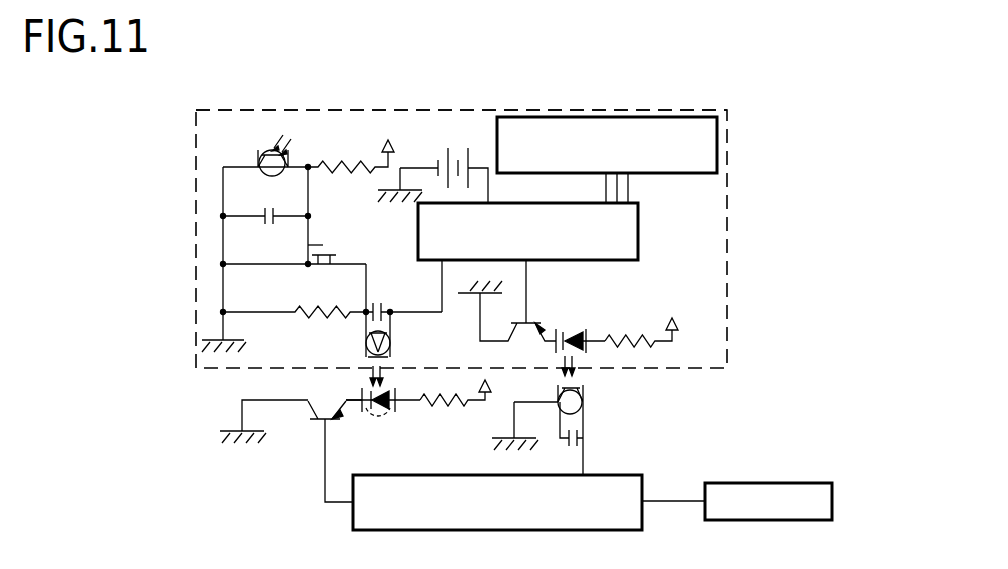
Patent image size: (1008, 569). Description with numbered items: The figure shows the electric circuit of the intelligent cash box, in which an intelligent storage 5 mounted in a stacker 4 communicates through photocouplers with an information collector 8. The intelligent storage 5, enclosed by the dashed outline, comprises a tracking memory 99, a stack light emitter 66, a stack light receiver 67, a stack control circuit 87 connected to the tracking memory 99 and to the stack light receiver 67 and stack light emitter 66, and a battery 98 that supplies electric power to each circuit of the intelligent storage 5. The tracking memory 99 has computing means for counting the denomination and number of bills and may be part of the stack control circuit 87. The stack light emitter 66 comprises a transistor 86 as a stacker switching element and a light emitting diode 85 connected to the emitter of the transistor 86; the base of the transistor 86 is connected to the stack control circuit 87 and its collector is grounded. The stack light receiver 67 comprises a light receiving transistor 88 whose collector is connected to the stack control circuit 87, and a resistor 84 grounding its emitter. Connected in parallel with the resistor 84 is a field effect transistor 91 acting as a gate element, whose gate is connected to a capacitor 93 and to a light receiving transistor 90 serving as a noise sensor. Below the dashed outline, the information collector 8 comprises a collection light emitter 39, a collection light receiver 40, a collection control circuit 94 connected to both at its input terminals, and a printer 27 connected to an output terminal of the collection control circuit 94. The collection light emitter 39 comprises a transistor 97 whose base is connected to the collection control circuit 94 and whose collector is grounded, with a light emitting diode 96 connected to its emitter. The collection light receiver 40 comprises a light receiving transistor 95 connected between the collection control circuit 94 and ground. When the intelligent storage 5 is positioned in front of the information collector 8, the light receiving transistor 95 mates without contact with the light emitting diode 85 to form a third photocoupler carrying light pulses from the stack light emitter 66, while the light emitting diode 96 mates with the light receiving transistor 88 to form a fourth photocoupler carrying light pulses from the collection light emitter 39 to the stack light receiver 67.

The stacker 4 is at (452, 106).
The intelligent storage 5 is at (371, 110).
The information collector 8 is at (680, 416).
The printer 27 is at (786, 483).
The collection light emitter 39 is at (400, 406).
The collection light receiver 40 is at (586, 410).
The stack light emitter 66 is at (598, 337).
The stack light receiver 67 is at (370, 296).
The resistor 84 is at (320, 324).
The light emitting diode 85 is at (569, 330).
The transistor 86 is at (532, 320).
The stack control circuit 87 is at (637, 261).
The light receiving transistor 88 is at (398, 343).
The light receiving transistor 90 is at (289, 158).
The field effect transistor 91 is at (310, 246).
The capacitor 93 is at (308, 256).
The collection control circuit 94 is at (643, 495).
The light receiving transistor 95 is at (586, 390).
The light emitting diode 96 is at (378, 412).
The transistor 97 is at (312, 422).
The battery 98 is at (437, 162).
The tracking memory 99 is at (660, 174).